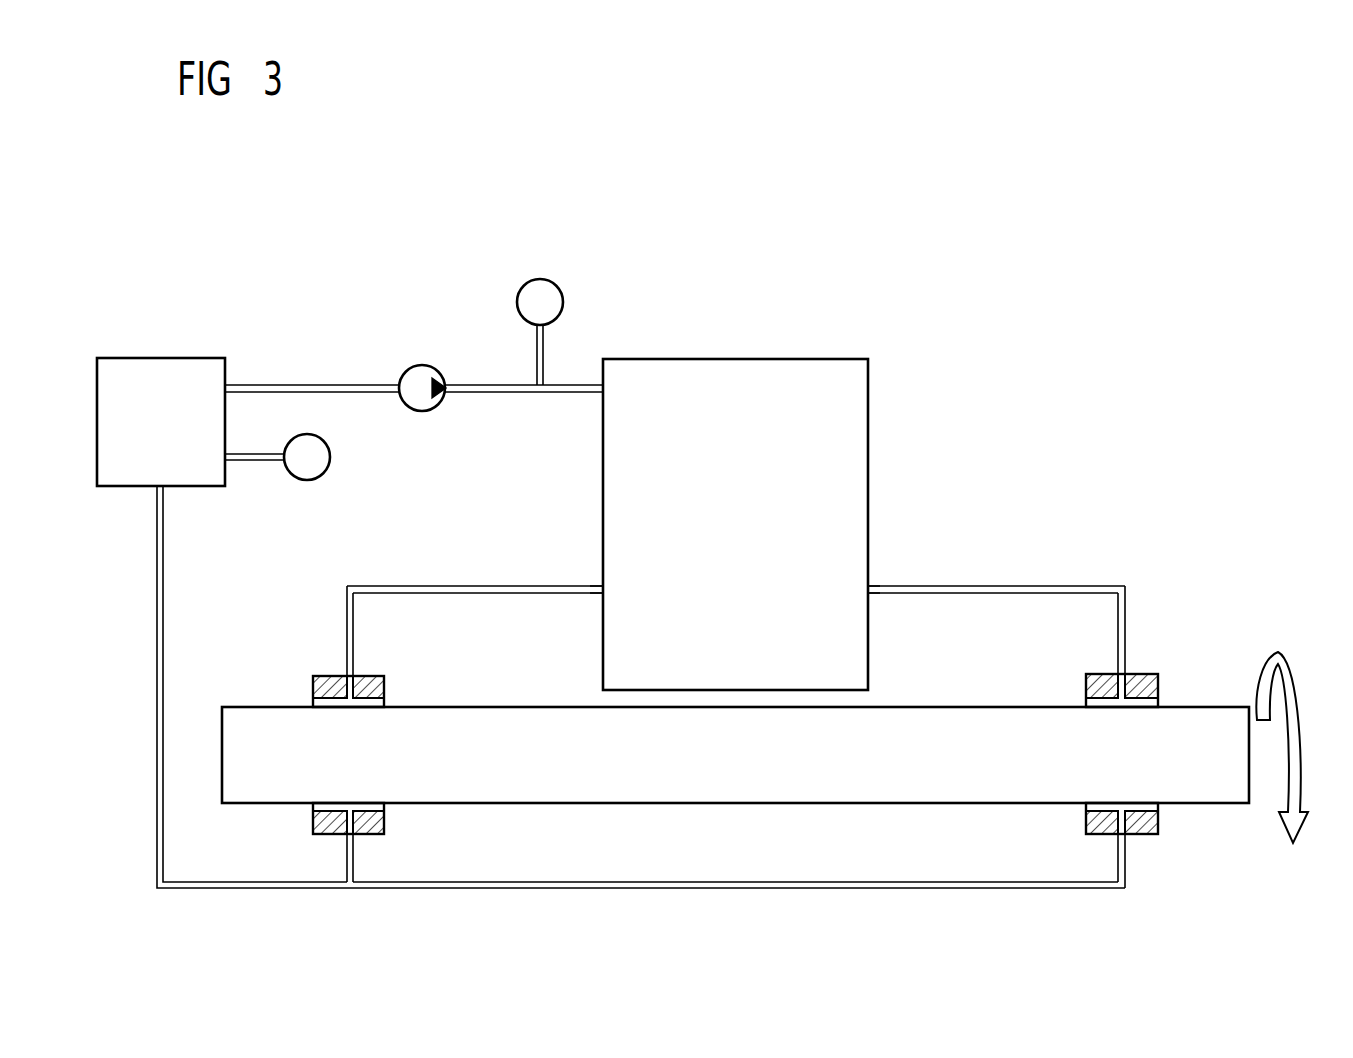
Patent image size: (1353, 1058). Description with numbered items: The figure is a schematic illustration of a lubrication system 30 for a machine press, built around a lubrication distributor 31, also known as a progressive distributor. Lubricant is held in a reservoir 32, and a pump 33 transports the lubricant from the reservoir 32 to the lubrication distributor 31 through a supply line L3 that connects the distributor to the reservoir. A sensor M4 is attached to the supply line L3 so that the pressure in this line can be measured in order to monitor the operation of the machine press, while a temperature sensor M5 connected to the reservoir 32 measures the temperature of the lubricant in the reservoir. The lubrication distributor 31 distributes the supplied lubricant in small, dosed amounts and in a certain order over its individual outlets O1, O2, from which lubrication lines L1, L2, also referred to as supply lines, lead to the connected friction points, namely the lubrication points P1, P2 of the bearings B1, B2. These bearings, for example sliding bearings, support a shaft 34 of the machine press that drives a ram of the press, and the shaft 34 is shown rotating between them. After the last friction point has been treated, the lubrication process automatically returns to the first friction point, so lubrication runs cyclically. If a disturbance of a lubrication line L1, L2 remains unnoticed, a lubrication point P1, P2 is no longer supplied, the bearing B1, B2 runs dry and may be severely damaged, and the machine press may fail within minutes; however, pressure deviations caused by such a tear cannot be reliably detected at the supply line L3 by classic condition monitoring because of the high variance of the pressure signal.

The lubrication system 30 is at (733, 228).
The lubrication distributor 31 is at (838, 324).
The reservoir 32 is at (160, 358).
The pump 33 is at (423, 365).
The shaft 34 is at (665, 776).
The sensor M4 is at (540, 279).
The temperature sensor M5 is at (330, 457).
The lubrication line L1 is at (1079, 585).
The lubrication line L2 is at (381, 585).
The supply line L3 is at (495, 396).
The outlet O1 is at (870, 585).
The outlet O2 is at (601, 585).
The lubrication point P1 is at (1127, 673).
The lubrication point P2 is at (345, 674).
The bearing B1 is at (1086, 822).
The bearing B2 is at (385, 822).